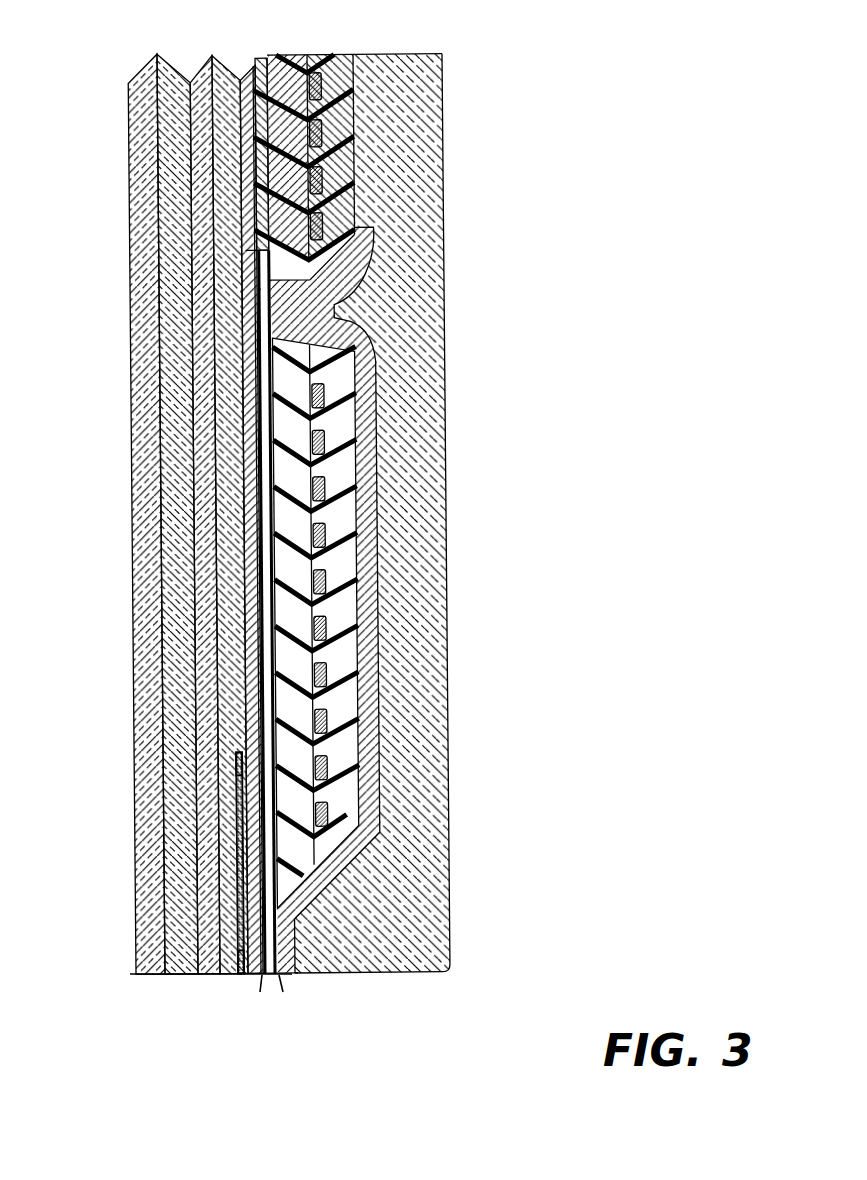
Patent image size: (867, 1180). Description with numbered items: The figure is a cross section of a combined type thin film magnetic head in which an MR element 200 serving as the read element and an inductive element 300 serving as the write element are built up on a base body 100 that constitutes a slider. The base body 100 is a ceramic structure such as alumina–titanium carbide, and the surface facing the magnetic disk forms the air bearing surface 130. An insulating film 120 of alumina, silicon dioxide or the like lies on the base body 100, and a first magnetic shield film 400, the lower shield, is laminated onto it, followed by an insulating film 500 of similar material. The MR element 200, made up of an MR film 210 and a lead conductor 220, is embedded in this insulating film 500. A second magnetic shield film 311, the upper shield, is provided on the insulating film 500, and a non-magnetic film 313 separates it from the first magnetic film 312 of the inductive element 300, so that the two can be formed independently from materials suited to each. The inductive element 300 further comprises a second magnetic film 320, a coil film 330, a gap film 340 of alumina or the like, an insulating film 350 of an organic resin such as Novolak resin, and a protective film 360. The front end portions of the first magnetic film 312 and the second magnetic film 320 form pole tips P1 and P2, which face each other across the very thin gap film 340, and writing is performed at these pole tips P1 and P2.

The base body 100 is at (142, 72).
The insulating film 120 is at (174, 56).
The air bearing surface 130 is at (205, 974).
The MR element 200 is at (228, 918).
The MR film 210 is at (230, 966).
The lead conductor 220 is at (232, 768).
The inductive element 300 is at (363, 877).
The second magnetic shield film 311 is at (244, 323).
The first magnetic film 312 is at (268, 283).
The non-magnetic film 313 is at (243, 256).
The second magnetic film 320 is at (368, 485).
The coil film 330 is at (335, 738).
The gap film 340 is at (244, 462).
The insulating film 350 is at (335, 652).
The protective film 360 is at (396, 101).
The first magnetic shield film 400 is at (202, 556).
The insulating film 500 is at (222, 80).
The pole tip P1 is at (237, 992).
The pole tip P2 is at (302, 993).